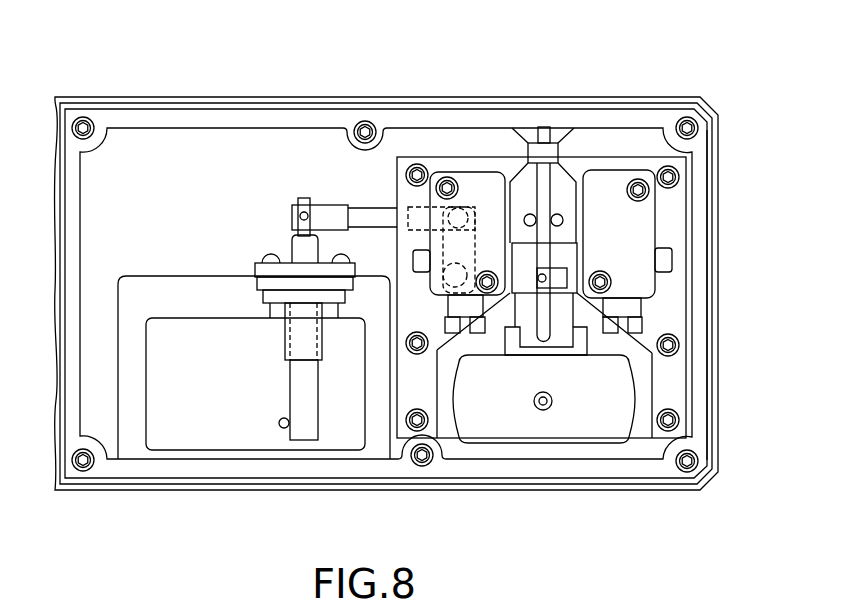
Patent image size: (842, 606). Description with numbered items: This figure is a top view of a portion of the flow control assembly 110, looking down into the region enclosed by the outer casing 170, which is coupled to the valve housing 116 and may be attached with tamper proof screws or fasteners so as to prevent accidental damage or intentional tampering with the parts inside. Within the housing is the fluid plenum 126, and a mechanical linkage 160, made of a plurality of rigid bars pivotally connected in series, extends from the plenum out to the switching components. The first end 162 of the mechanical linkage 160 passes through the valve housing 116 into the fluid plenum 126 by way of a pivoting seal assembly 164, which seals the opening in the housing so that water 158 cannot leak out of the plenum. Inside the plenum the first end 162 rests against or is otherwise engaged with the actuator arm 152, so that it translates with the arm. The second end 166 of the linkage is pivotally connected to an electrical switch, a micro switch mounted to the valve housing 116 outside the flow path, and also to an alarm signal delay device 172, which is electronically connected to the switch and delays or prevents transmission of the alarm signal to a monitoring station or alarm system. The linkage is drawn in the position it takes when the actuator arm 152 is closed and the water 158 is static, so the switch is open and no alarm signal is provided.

The flow control assembly 110 is at (662, 74).
The valve housing 116 is at (248, 158).
The fluid plenum 126 is at (206, 362).
The actuator arm 152 is at (279, 422).
The water 158 is at (340, 420).
The mechanical linkage 160 is at (275, 210).
The first end 162 is at (297, 397).
The pivoting seal assembly 164 is at (272, 272).
The second end 166 is at (545, 277).
The outer casing 170 is at (718, 293).
The alarm signal delay device 172 is at (495, 425).